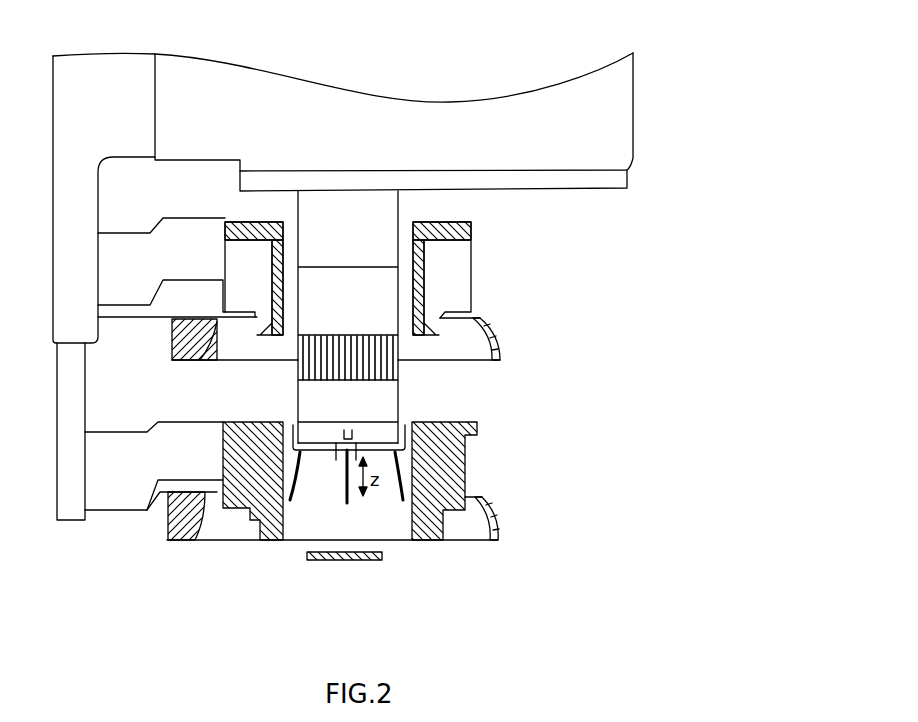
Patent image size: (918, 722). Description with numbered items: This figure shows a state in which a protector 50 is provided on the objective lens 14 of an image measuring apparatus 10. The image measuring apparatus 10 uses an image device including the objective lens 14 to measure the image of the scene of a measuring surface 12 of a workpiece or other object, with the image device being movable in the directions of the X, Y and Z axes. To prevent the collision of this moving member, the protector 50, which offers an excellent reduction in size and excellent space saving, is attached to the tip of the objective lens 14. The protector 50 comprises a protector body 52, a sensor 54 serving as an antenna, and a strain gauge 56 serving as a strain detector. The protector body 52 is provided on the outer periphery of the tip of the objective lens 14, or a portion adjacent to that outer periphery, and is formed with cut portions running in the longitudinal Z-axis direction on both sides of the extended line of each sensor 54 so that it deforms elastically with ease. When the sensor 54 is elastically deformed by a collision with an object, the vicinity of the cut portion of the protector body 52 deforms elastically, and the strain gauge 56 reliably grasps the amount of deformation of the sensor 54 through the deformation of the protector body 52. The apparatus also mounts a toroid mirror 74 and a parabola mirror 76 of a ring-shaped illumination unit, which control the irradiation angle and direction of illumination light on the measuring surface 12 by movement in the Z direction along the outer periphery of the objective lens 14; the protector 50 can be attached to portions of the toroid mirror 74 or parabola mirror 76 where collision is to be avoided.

The image measuring apparatus 10 is at (668, 141).
The measuring surface 12 is at (382, 551).
The objective lens 14 is at (400, 397).
The protector 50 is at (285, 419).
The protector body 52 is at (467, 448).
The sensor 54 is at (397, 493).
The strain gauge 56 is at (290, 431).
The toroid mirror 74 is at (437, 334).
The parabola mirror 76 is at (497, 333).